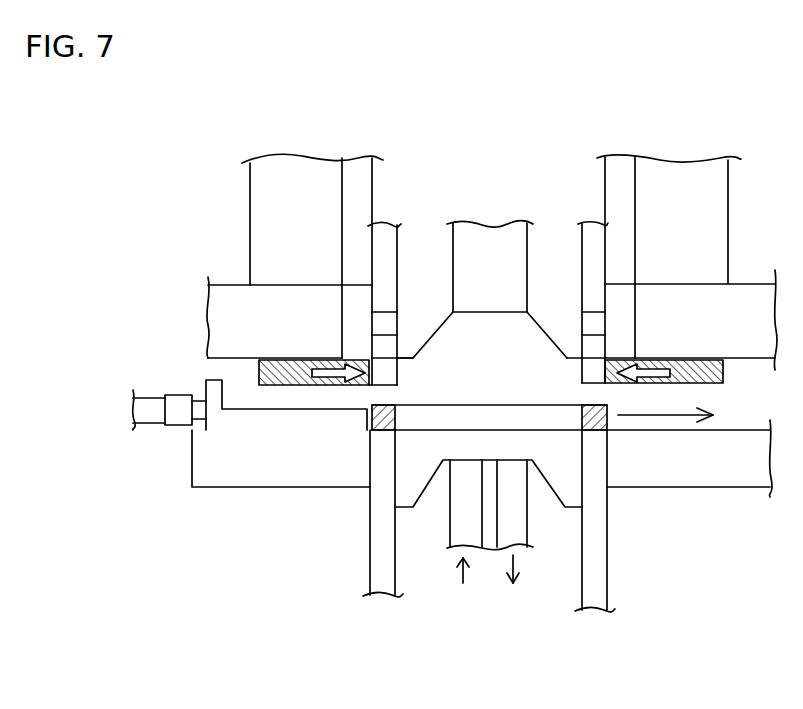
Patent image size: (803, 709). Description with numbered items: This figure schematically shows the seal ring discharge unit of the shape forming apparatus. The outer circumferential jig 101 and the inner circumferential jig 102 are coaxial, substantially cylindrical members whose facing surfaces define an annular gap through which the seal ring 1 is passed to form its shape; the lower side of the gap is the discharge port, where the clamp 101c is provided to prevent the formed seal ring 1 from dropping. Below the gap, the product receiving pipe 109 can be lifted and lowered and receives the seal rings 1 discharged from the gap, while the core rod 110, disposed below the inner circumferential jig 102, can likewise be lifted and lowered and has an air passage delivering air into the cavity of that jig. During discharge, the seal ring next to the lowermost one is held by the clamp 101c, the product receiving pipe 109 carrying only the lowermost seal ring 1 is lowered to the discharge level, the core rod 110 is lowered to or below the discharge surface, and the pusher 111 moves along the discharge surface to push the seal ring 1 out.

The seal ring 1 is at (353, 358).
The outer circumferential jig 101 is at (352, 183).
The clamp 101c is at (258, 375).
The inner circumferential jig 102 is at (424, 257).
The product receiving pipe 109 is at (372, 567).
The core rod 110 is at (555, 555).
The pusher 111 is at (242, 430).